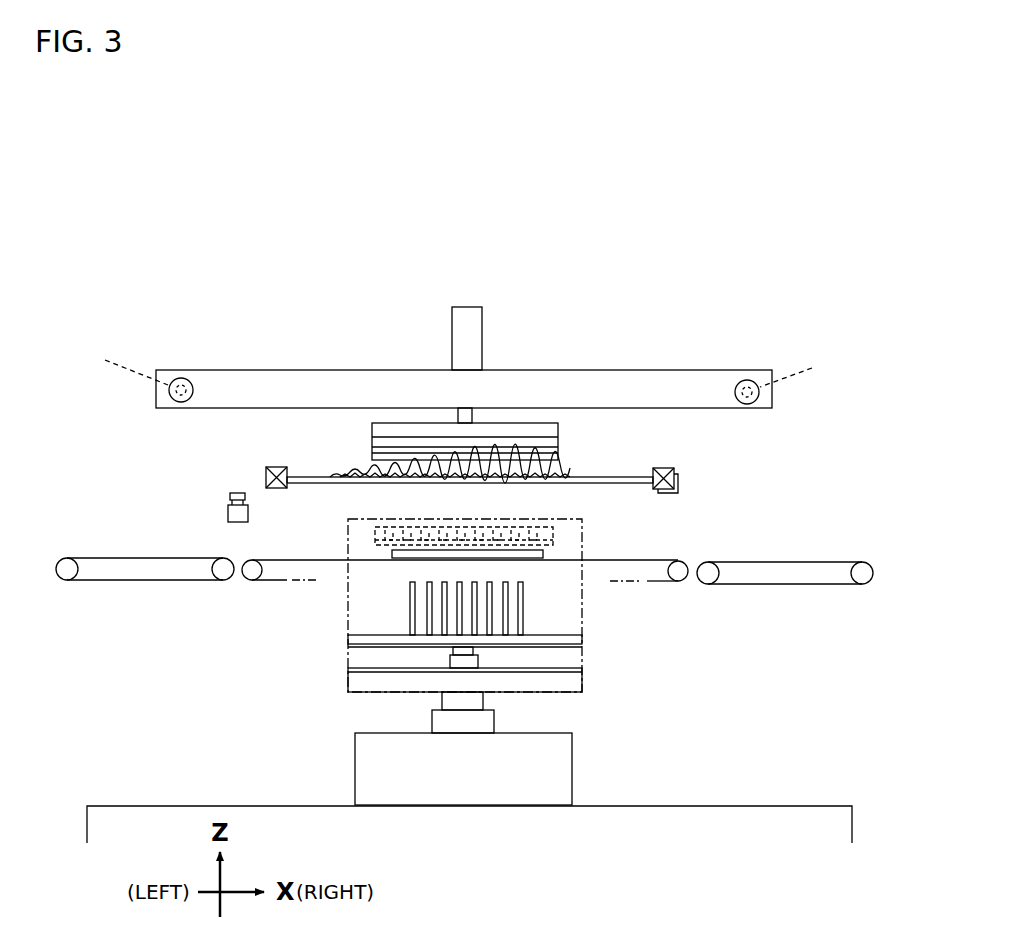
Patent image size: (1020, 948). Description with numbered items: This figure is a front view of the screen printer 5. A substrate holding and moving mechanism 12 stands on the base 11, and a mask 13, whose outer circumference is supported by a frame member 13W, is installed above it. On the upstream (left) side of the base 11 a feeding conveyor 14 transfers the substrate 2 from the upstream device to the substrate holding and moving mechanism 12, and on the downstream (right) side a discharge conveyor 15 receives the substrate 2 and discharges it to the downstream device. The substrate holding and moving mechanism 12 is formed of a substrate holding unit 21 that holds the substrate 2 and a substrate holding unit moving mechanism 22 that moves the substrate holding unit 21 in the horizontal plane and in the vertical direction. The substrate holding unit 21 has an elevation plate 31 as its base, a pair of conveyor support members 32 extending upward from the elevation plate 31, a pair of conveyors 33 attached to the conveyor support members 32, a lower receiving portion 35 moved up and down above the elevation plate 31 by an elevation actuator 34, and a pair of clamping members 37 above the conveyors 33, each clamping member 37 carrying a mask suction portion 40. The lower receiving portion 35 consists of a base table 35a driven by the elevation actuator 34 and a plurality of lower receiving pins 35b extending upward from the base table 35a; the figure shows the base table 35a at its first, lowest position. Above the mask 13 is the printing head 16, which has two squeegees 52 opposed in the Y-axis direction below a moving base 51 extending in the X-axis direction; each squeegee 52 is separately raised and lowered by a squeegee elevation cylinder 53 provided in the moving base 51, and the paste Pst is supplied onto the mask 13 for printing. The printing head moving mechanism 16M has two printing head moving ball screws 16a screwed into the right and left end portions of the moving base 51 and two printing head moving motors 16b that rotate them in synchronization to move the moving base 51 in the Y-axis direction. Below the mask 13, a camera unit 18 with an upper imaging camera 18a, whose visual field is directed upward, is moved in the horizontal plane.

The screen printer 5 is at (482, 178).
The squeegee elevation cylinder 53 is at (467, 310).
The printing head 16 is at (435, 352).
The printing head moving mechanism 16M is at (765, 362).
The printing head moving ball screw 16a is at (461, 363).
The printing head moving motor 16b is at (181, 378).
The moving base 51 is at (250, 370).
The squeegee 52 is at (443, 385).
The mask 13 is at (315, 477).
The frame member 13W is at (728, 462).
The paste Pst is at (568, 473).
The mask suction portion 40 is at (493, 538).
The clamping member 37 is at (580, 558).
The camera unit 18 is at (233, 483).
The upper imaging camera 18a is at (228, 512).
The feeding conveyor 14 is at (123, 583).
The discharge conveyor 15 is at (780, 588).
The substrate holding and moving mechanism 12 is at (303, 708).
The substrate holding unit 21 is at (588, 700).
The conveyor support member 32 is at (575, 605).
The substrate 2 is at (426, 524).
The conveyor 33 is at (498, 552).
The lower receiving portion 35 is at (512, 650).
The lower receiving pin 35b is at (425, 597).
The base table 35a is at (414, 639).
The elevation actuator 34 is at (424, 687).
The elevation plate 31 is at (580, 683).
The substrate holding unit moving mechanism 22 is at (360, 768).
The base 11 is at (717, 822).